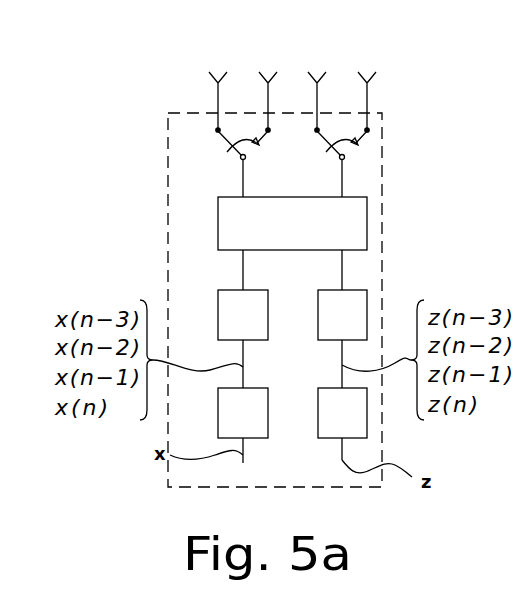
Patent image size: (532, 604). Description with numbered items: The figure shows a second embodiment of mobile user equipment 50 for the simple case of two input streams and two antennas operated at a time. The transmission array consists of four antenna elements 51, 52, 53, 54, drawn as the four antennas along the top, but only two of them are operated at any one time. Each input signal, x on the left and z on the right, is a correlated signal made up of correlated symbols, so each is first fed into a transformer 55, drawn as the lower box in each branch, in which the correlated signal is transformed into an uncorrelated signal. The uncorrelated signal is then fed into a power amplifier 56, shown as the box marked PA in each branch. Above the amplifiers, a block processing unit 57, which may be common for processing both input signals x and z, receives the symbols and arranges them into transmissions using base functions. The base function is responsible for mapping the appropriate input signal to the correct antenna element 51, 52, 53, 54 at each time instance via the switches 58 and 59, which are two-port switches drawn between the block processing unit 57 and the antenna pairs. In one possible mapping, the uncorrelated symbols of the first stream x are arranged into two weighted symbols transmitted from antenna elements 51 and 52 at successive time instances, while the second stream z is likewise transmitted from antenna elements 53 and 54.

The user equipment 50 is at (117, 82).
The antenna element 51 is at (218, 94).
The antenna element 52 is at (268, 102).
The antenna element 53 is at (317, 102).
The antenna element 54 is at (367, 101).
The transformer 55 is at (225, 420).
The power amplifier 56 is at (220, 292).
The block processing unit 57 is at (348, 223).
The switch 58 is at (245, 164).
The switch 59 is at (345, 164).